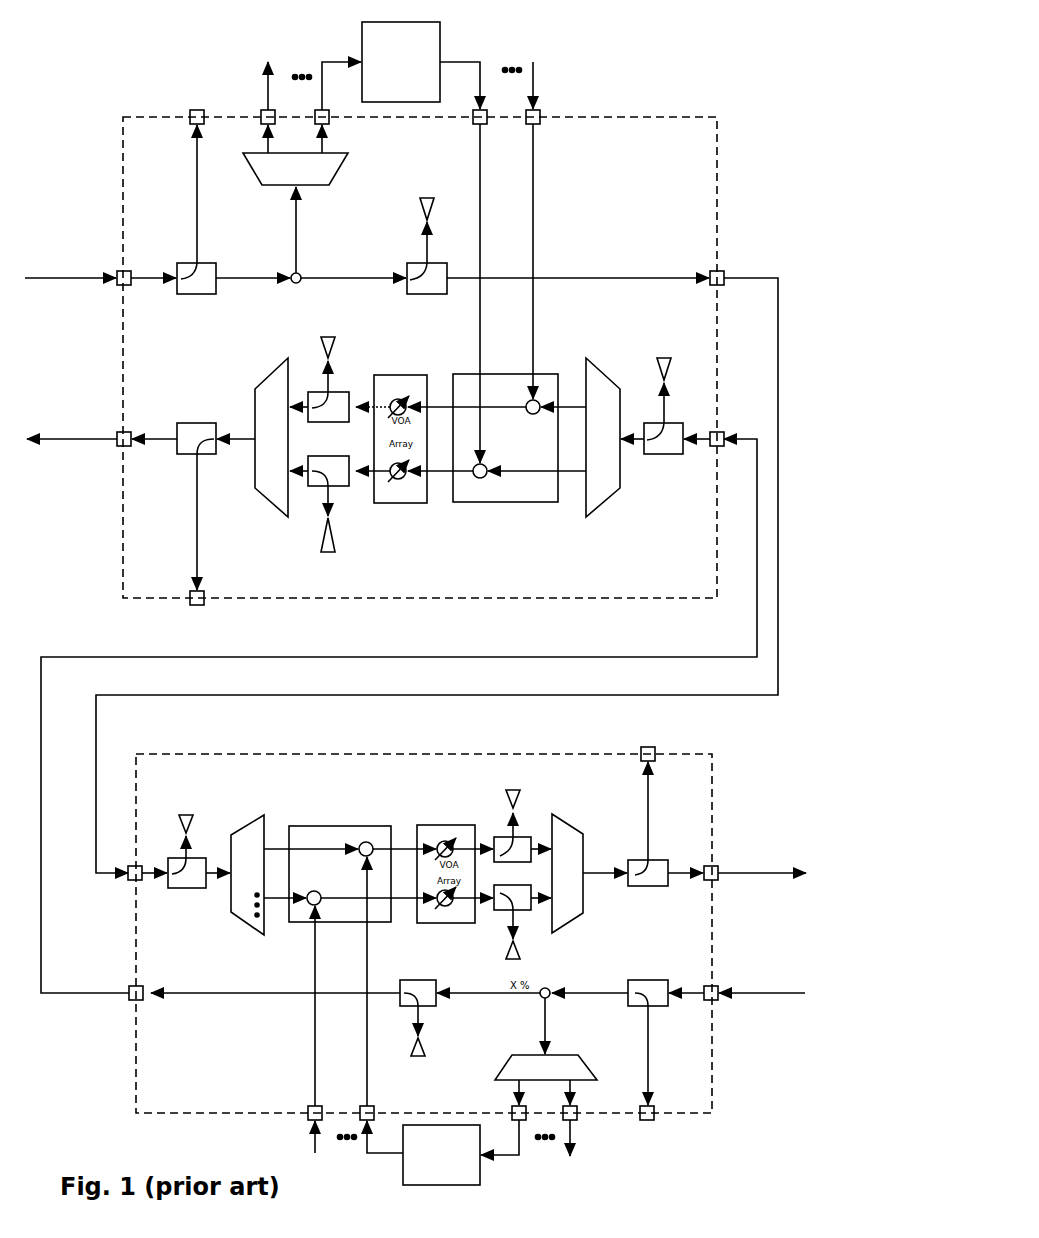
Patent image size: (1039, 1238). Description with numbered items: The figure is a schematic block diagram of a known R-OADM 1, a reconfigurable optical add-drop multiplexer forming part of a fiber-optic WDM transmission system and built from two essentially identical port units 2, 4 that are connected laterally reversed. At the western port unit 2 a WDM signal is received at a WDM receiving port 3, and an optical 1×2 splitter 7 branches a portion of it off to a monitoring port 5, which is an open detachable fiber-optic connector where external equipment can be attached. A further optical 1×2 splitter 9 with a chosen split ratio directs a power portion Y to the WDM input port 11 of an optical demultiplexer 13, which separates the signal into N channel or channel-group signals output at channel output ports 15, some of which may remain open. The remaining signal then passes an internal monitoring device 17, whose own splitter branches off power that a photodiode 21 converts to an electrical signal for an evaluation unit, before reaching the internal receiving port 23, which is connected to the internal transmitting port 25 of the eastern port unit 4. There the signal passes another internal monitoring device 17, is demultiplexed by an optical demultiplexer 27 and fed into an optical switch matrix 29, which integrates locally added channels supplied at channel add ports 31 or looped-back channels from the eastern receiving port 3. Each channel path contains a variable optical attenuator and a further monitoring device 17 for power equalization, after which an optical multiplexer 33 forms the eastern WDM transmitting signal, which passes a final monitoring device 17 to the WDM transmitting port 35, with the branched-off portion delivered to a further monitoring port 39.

The R-OADM 1 is at (778, 215).
The western port unit 2 is at (660, 118).
The WDM receiving port 3 is at (120, 286).
The eastern port unit 4 is at (718, 810).
The monitoring port 5 is at (193, 110).
The optical 1×2 splitter 7 is at (208, 292).
The optical 1×2 splitter 9 is at (292, 285).
The WDM input port 11 is at (287, 196).
The optical demultiplexer 13 is at (322, 178).
The channel output ports 15 is at (545, 1160).
The internal monitoring device 17 is at (412, 243).
The photodiode 21 is at (436, 207).
The internal receiving port 23 is at (722, 275).
The internal transmitting port 25 is at (722, 434).
The optical demultiplexer 27 is at (594, 492).
The optical switch matrix 29 is at (505, 495).
The channel add ports 31 is at (487, 113).
The optical multiplexer 33 is at (280, 490).
The WDM transmitting port 35 is at (119, 446).
The monitoring port 39 is at (196, 606).